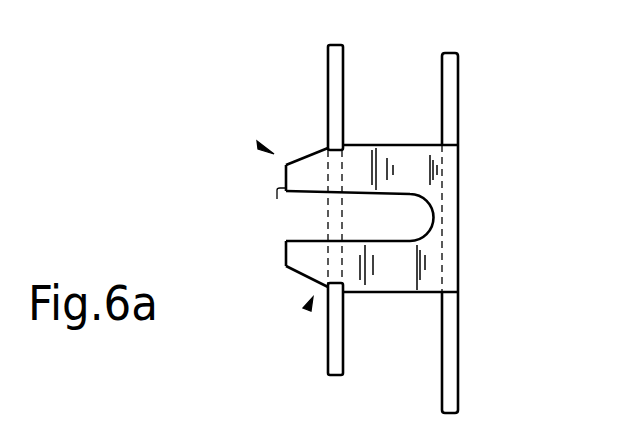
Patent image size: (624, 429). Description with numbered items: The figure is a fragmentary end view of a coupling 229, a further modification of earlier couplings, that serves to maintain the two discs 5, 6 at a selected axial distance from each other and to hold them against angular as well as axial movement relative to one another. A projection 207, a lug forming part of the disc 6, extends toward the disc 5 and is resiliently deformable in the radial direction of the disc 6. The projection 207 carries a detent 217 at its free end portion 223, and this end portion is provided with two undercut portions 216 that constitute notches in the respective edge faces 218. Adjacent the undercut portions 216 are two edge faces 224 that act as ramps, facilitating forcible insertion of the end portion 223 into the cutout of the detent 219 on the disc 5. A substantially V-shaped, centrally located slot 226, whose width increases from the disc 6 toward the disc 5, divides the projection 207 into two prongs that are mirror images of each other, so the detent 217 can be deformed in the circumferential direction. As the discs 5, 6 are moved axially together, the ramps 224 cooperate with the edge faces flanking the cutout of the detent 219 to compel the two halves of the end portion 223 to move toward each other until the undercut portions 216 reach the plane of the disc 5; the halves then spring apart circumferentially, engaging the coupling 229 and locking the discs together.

The disc 5 is at (337, 358).
The disc 6 is at (457, 387).
The projection 207 is at (430, 265).
The undercut portions 216 is at (320, 158).
The detent 217 is at (308, 306).
The edge faces 218 is at (428, 142).
The detent 219 is at (333, 230).
The free end portion 223 is at (278, 236).
The edge faces 224 is at (305, 155).
The slot 226 is at (377, 207).
The coupling 229 is at (262, 147).